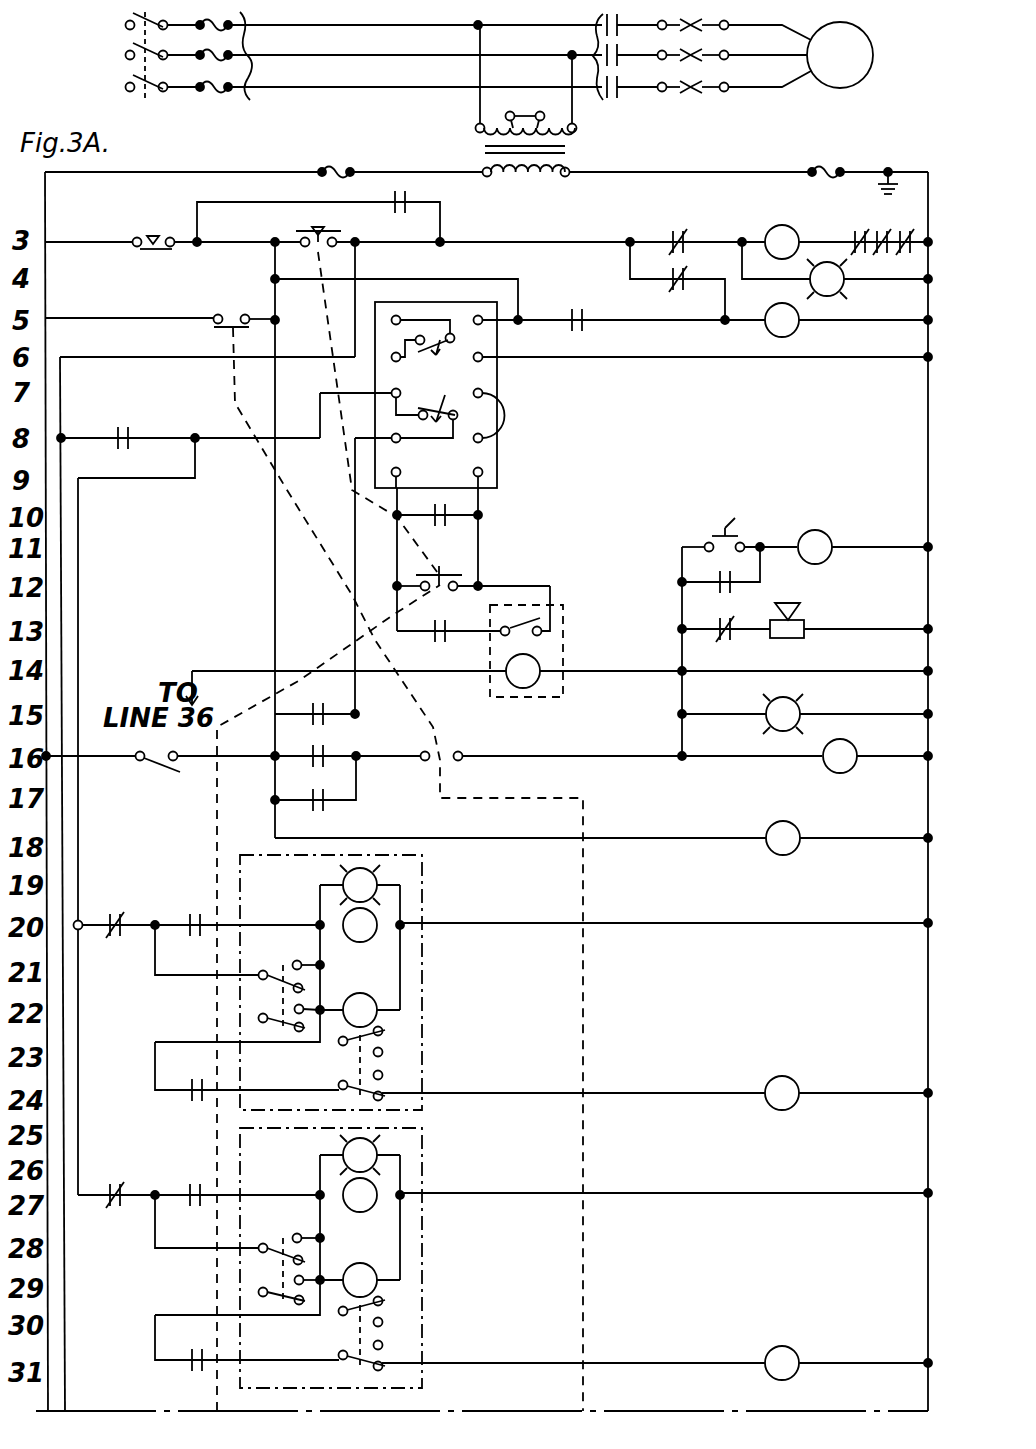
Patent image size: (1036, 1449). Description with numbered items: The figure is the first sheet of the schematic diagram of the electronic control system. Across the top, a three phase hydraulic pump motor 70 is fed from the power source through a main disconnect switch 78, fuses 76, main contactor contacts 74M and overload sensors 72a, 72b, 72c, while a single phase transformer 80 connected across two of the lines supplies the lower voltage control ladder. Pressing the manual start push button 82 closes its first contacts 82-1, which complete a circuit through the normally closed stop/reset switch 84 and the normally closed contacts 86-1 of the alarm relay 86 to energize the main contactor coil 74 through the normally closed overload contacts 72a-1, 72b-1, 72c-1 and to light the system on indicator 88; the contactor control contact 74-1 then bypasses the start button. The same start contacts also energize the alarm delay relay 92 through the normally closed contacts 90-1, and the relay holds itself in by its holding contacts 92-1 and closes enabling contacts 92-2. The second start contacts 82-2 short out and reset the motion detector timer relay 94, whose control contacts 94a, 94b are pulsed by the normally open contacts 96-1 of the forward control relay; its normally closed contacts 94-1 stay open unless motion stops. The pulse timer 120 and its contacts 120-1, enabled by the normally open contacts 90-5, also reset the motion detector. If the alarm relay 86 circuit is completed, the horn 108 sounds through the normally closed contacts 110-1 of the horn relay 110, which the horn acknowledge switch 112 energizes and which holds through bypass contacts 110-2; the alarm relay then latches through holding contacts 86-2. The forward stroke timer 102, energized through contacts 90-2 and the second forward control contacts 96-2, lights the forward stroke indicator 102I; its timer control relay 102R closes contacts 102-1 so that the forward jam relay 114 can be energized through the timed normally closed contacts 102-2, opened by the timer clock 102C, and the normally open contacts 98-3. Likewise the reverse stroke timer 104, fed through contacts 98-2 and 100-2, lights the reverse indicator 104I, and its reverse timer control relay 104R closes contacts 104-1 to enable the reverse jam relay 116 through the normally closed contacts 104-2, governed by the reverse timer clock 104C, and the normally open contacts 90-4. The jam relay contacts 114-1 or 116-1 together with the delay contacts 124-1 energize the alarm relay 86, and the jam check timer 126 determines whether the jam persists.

The main disconnect switch 78 is at (108, 54).
The fuses 76 is at (262, 46).
The main contactor contacts 74M is at (596, 48).
The overload sensor 72a is at (700, 30).
The overload sensor 72b is at (700, 60).
The overload sensor 72c is at (704, 89).
The hydraulic pump motor 70 is at (870, 70).
The single phase transformer 80 is at (478, 138).
The normally closed contacts of overload sensor 72b-1 is at (835, 170).
The normally closed contacts of overload sensor 72c-1 is at (909, 220).
The stop/reset switch 84 is at (152, 236).
The manual start push button 82 is at (292, 232).
The first contacts of start switch 82-1 is at (301, 246).
The contactor control contact 74-1 is at (420, 204).
The normally closed contacts of alarm relay 86-1 is at (674, 235).
The main contactor coil 74 is at (772, 238).
The normally closed contacts of overload sensor 72a-1 is at (854, 238).
The system on indicator 88 is at (843, 286).
The holding contacts of alarm delay relay 92-1 is at (568, 302).
The normally closed contacts of maximum reverse stroke relay 90-1 is at (672, 286).
The alarm delay relay 92 is at (798, 324).
The normally closed contacts of motion detector 94-1 is at (431, 379).
The motion detector timer relay 94 is at (474, 395).
The control contact of motion timer 94a is at (401, 474).
The control contact of motion timer 94b is at (483, 474).
The enabling contacts of alarm delay relay 92-2 is at (128, 428).
The normally open contacts of forward control relay 96-1 is at (456, 506).
The second contacts of start switch 82-2 is at (444, 574).
The horn acknowledge switch 112 is at (731, 521).
The horn relay 110 is at (820, 536).
The bypass contacts of horn relay 110-2 is at (710, 578).
The normally closed contacts of horn relay 110-1 is at (710, 626).
The horn 108 is at (794, 616).
The normally open contacts of maximum reverse stroke relay 90-5 is at (432, 648).
The contacts of pulse timer 120-1 is at (540, 640).
The pulse timer 120 is at (569, 658).
The holding contacts of alarm relay 86-2 is at (317, 698).
The normally open contacts of forward jam relay 114-1 is at (312, 748).
The delay contacts of jam delay timer 124-1 is at (153, 774).
The normally open contacts of reverse jam relay 116-1 is at (330, 806).
The alarm relay 86 is at (828, 762).
The jam check timer 126 is at (795, 836).
The normally closed contacts of maximum reverse stroke relay 90-2 is at (114, 910).
The second normally open contacts of forward control relay 96-2 is at (194, 914).
The forward stroke indicator 102I is at (380, 880).
The forward stroke timer 102 is at (310, 988).
The normally open contacts of forward stroke timer 102-1 is at (281, 973).
The timer control relay 102R is at (376, 928).
The timer clock 102C is at (375, 1008).
The timed normally closed contacts of forward stroke timer 102-2 is at (386, 1092).
The normally open contacts of maximum forward stroke relay 98-3 is at (193, 1096).
The forward jam relay 114 is at (780, 1078).
The contacts of reverse control relay 100-2 is at (194, 1184).
The reverse indicator 104I is at (375, 1153).
The reverse stroke timer 104 is at (321, 1261).
The normally open contacts of reverse stroke timer 104-1 is at (278, 1242).
The reverse timer control relay 104R is at (371, 1198).
The reverse timer clock 104C is at (372, 1278).
The normally closed contacts of maximum forward stroke relay 98-2 is at (116, 1214).
The normally closed contacts of reverse stroke timer 104-2 is at (391, 1356).
The reverse jam relay 116 is at (782, 1346).
The normally open contacts of maximum reverse stroke relay 90-4 is at (195, 1364).